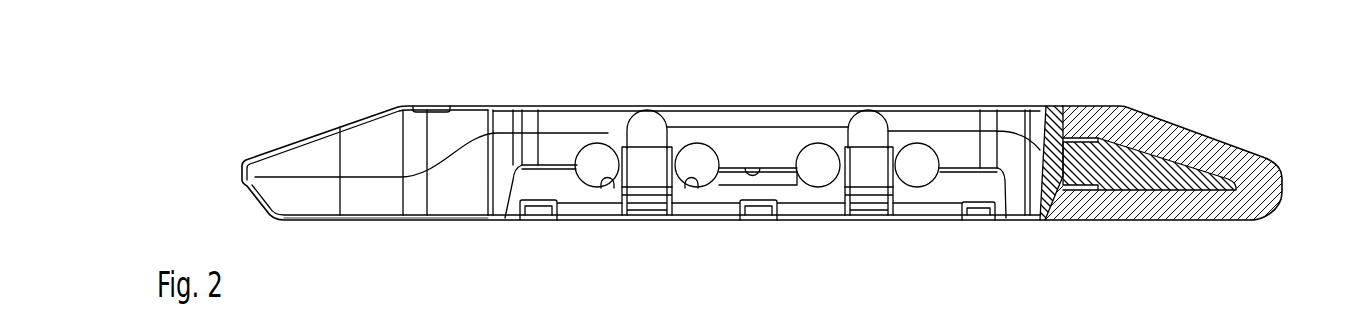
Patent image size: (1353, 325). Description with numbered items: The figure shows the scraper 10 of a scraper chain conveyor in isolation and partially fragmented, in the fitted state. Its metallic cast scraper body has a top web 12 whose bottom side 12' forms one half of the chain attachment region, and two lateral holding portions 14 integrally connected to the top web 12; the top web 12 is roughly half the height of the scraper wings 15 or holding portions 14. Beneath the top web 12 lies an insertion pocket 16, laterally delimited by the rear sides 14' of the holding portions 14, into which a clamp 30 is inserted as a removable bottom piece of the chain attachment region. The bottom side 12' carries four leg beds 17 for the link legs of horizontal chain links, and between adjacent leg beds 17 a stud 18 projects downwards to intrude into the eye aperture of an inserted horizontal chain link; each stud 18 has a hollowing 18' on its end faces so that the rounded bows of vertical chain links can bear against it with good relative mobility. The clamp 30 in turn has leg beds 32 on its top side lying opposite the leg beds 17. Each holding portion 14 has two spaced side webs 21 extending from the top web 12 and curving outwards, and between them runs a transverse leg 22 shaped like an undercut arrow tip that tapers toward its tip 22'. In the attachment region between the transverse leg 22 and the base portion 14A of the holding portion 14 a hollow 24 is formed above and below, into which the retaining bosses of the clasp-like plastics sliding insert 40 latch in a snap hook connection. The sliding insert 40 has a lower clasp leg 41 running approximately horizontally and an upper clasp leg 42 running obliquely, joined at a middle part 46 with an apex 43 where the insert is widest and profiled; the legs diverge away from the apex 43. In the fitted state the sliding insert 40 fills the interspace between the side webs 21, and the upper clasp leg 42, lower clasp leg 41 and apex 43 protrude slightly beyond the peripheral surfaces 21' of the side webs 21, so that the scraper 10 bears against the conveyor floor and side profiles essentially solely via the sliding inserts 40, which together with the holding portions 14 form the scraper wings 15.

The scraper 10 is at (1144, 224).
The top web 12 is at (647, 127).
The bottom side of the top web 12' is at (758, 112).
The holding portion 14 is at (878, 203).
The rear side of the holding portion 14' is at (748, 233).
The base portion of the holding portion 14A is at (1053, 173).
The scraper wing 15 is at (330, 118).
The insertion pocket 16 is at (885, 228).
The leg bed 17 is at (597, 165).
The stud 18 is at (745, 113).
The hollowing 18' is at (757, 94).
The side web 21 is at (346, 127).
The peripheral surface of the side web 21' is at (386, 258).
The transverse leg 22 is at (1139, 203).
The tip of the transverse leg 22' is at (1246, 244).
The hollow 24 is at (1072, 142).
The clamp 30 is at (813, 202).
The leg bed 32 is at (604, 181).
The sliding insert 40 is at (313, 229).
The lower clasp leg 41 is at (392, 219).
The upper clasp leg 42 is at (375, 115).
The apex 43 is at (246, 182).
The middle part 46 is at (1262, 182).